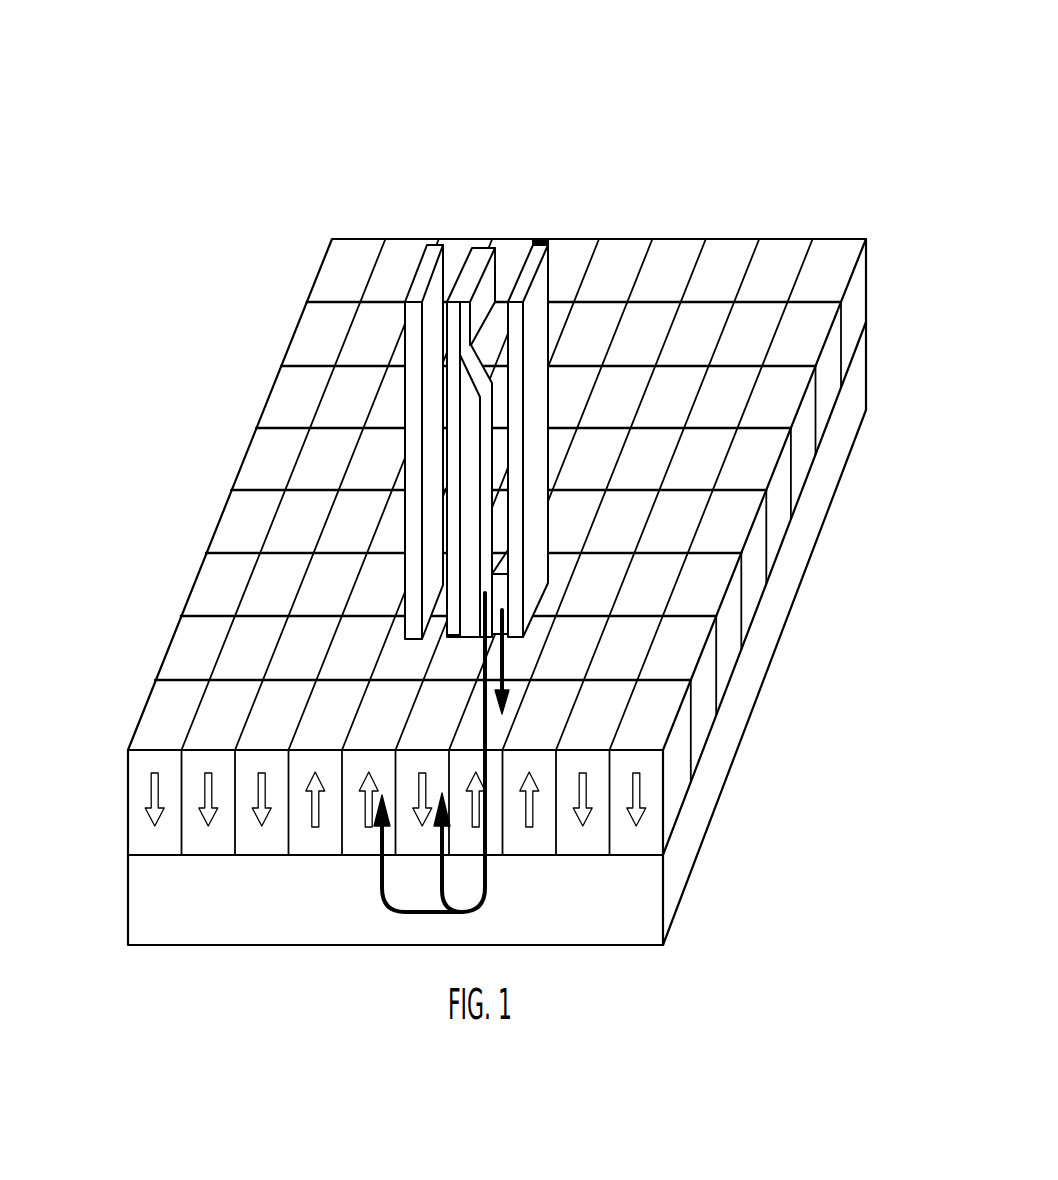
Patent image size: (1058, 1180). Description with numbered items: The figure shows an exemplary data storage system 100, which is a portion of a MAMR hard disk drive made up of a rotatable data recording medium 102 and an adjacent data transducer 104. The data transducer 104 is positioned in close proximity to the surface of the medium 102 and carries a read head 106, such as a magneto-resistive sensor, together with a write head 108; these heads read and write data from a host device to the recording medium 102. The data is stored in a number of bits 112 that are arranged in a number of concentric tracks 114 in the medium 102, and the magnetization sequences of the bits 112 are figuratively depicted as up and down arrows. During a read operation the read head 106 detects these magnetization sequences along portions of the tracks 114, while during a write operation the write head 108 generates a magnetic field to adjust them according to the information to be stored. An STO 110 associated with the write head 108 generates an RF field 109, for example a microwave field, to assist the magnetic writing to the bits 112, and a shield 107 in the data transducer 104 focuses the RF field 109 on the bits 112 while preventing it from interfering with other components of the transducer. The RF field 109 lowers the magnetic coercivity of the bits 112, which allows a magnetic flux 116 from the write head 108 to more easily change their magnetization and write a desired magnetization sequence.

The data storage system 100 is at (192, 138).
The data recording medium 102 is at (100, 715).
The data transducer 104 is at (447, 145).
The read head 106 is at (416, 265).
The shield 107 is at (545, 243).
The write head 108 is at (481, 247).
The RF field 109 is at (505, 657).
The STO 110 is at (508, 592).
The bits 112 is at (808, 288).
The tracks 114 is at (272, 388).
The magnetic flux 116 is at (488, 833).